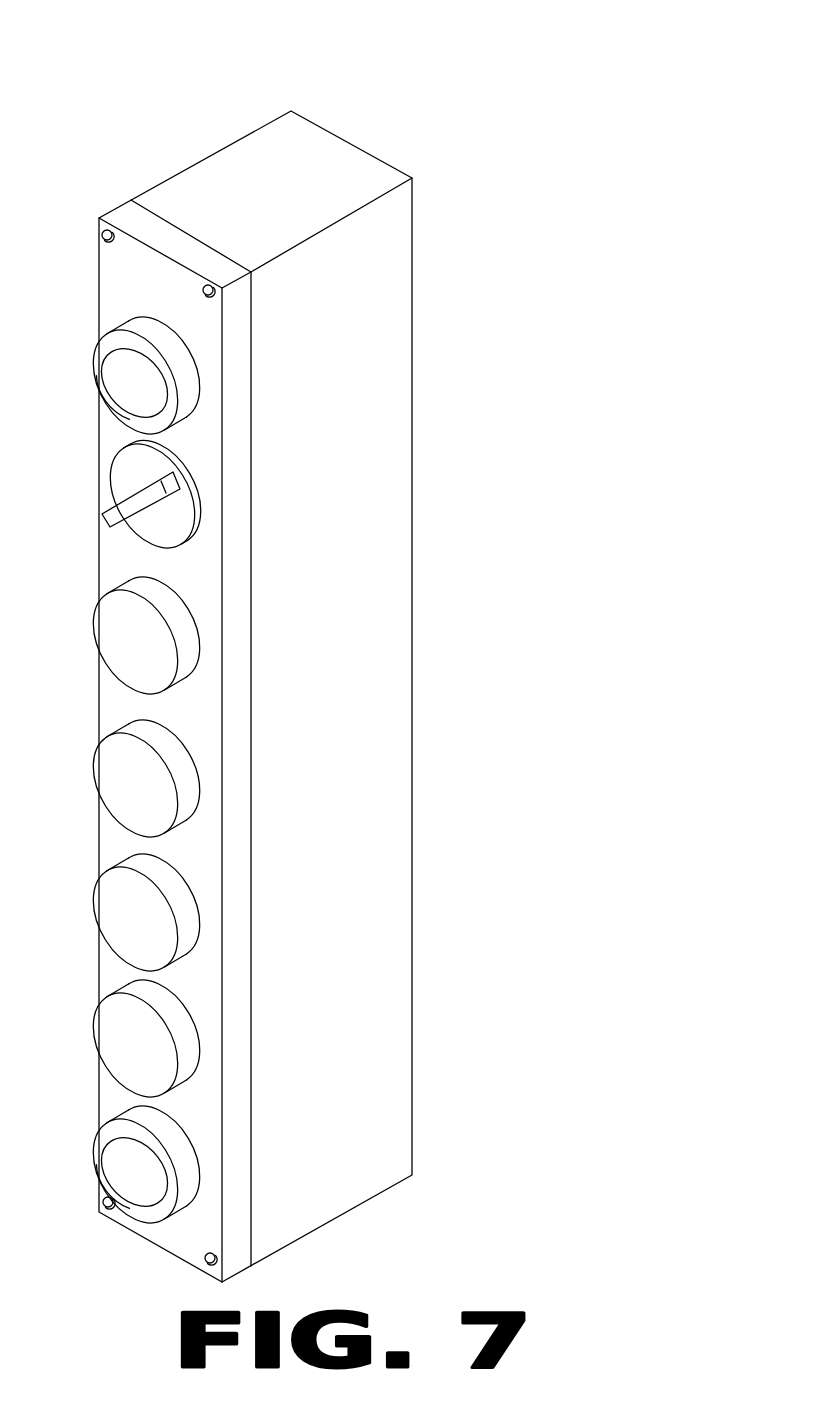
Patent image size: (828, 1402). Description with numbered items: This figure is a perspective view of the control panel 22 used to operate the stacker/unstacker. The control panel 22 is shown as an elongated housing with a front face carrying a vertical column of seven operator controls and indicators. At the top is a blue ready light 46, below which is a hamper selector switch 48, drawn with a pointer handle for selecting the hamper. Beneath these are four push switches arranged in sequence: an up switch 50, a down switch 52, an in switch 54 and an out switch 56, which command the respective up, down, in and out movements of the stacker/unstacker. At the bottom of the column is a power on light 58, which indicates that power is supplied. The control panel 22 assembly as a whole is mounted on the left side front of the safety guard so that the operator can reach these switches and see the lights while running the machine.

The control panel 22 is at (424, 110).
The blue ready light 46 is at (192, 390).
The hamper selector switch 48 is at (197, 507).
The up switch 50 is at (192, 647).
The down switch 52 is at (197, 788).
The in switch 54 is at (187, 922).
The out switch 56 is at (188, 1042).
The power on light 58 is at (192, 1157).